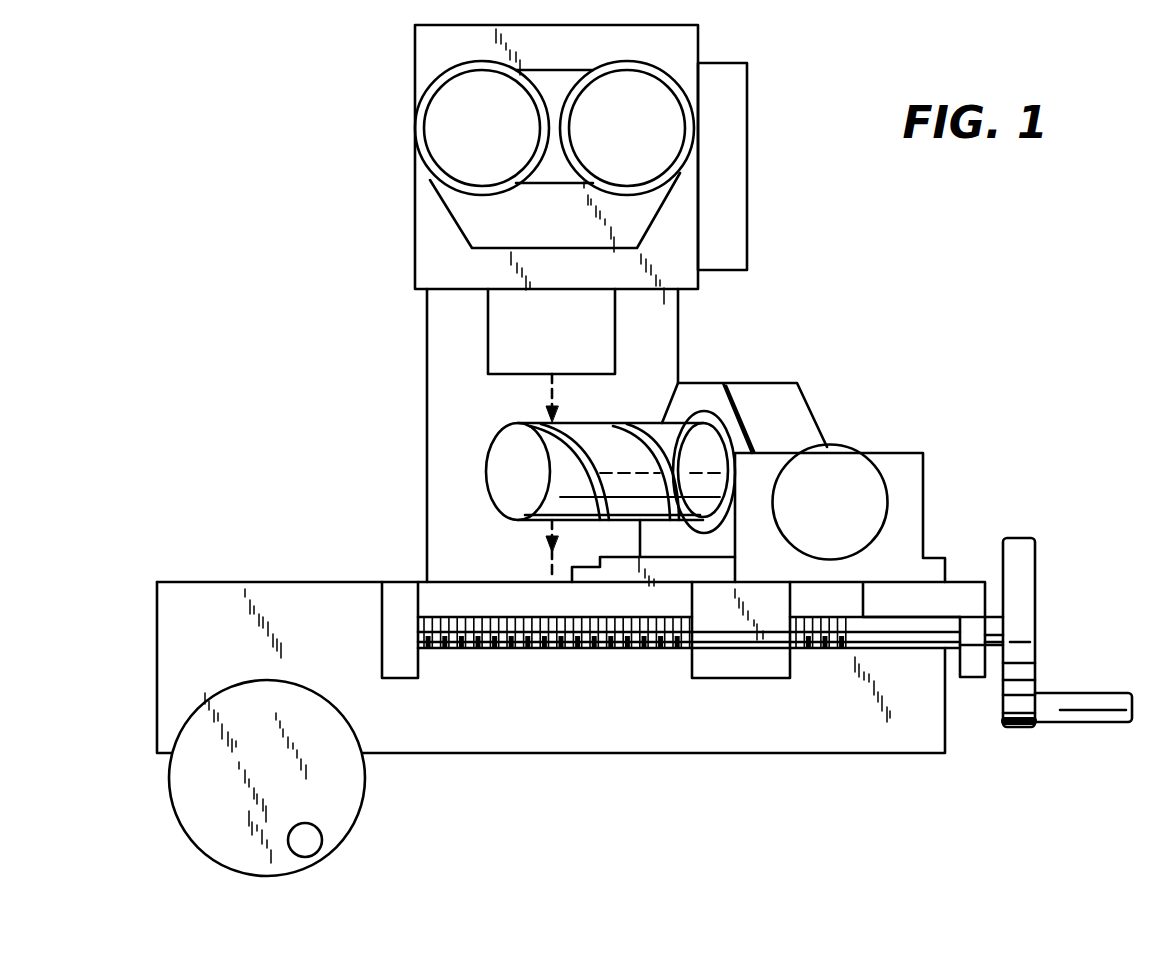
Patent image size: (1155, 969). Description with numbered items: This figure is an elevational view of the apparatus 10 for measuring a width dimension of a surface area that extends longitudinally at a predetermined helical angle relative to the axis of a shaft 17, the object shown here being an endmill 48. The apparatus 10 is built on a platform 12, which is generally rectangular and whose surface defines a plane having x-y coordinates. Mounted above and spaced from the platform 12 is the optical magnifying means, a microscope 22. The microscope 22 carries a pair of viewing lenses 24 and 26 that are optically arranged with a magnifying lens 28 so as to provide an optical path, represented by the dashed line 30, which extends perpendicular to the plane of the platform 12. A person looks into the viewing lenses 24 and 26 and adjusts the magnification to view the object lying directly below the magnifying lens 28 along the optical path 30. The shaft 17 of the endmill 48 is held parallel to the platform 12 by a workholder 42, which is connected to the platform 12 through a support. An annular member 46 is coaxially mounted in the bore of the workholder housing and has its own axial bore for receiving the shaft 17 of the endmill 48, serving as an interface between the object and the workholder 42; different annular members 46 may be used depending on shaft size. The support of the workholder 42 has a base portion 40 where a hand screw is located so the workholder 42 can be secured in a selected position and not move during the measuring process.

The apparatus 10 is at (288, 306).
The platform 12 is at (317, 578).
The shaft 17 is at (502, 495).
The microscope 22 is at (735, 190).
The viewing lens 24 is at (438, 125).
The viewing lens 26 is at (673, 118).
The magnifying lens 28 is at (507, 343).
The optical path 30 is at (548, 402).
The base portion 40 is at (722, 540).
The workholder 42 is at (797, 403).
The annular member 46 is at (703, 417).
The endmill 48 is at (583, 470).